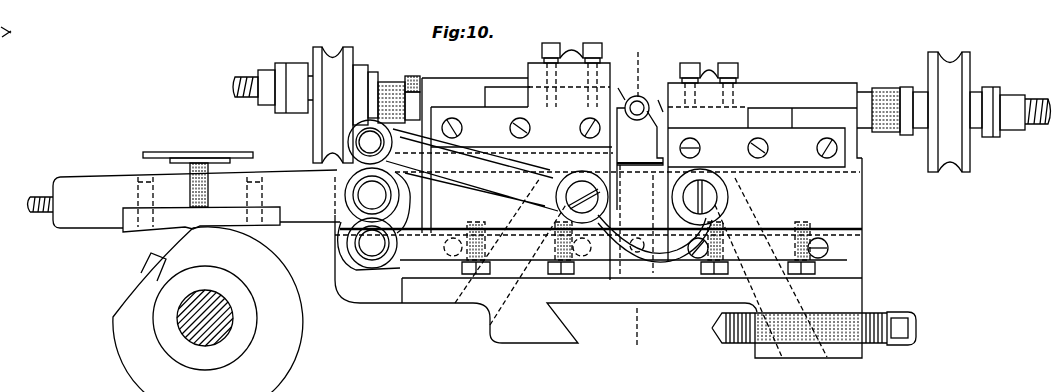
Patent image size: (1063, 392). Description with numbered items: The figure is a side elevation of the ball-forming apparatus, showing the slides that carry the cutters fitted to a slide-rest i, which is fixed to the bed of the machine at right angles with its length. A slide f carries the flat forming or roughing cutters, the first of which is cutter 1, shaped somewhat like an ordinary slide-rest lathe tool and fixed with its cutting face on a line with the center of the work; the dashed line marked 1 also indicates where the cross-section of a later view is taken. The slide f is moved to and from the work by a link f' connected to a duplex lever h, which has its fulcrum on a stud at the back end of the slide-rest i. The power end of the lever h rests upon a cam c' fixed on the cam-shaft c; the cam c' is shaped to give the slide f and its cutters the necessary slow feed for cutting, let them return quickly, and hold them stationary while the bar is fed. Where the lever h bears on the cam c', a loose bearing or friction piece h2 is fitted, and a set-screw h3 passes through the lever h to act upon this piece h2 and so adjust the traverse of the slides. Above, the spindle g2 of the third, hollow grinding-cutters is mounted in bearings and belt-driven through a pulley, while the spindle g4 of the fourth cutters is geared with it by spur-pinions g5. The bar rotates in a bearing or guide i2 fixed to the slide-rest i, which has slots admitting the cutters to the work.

The cutter-spindle g4 is at (642, 98).
The spur-pinion g5 is at (398, 88).
The spindle g2 is at (638, 102).
The duplex lever h is at (225, 195).
The loose bearing or friction piece h2 is at (201, 214).
The set-screw h3 is at (198, 170).
The slide f is at (598, 161).
The link f' is at (557, 195).
The slide-rest i is at (625, 258).
The bearing or guide i2 is at (640, 185).
The cam-shaft c is at (205, 318).
The cam c' is at (208, 309).
The forming or roughing cutter 1 is at (636, 198).